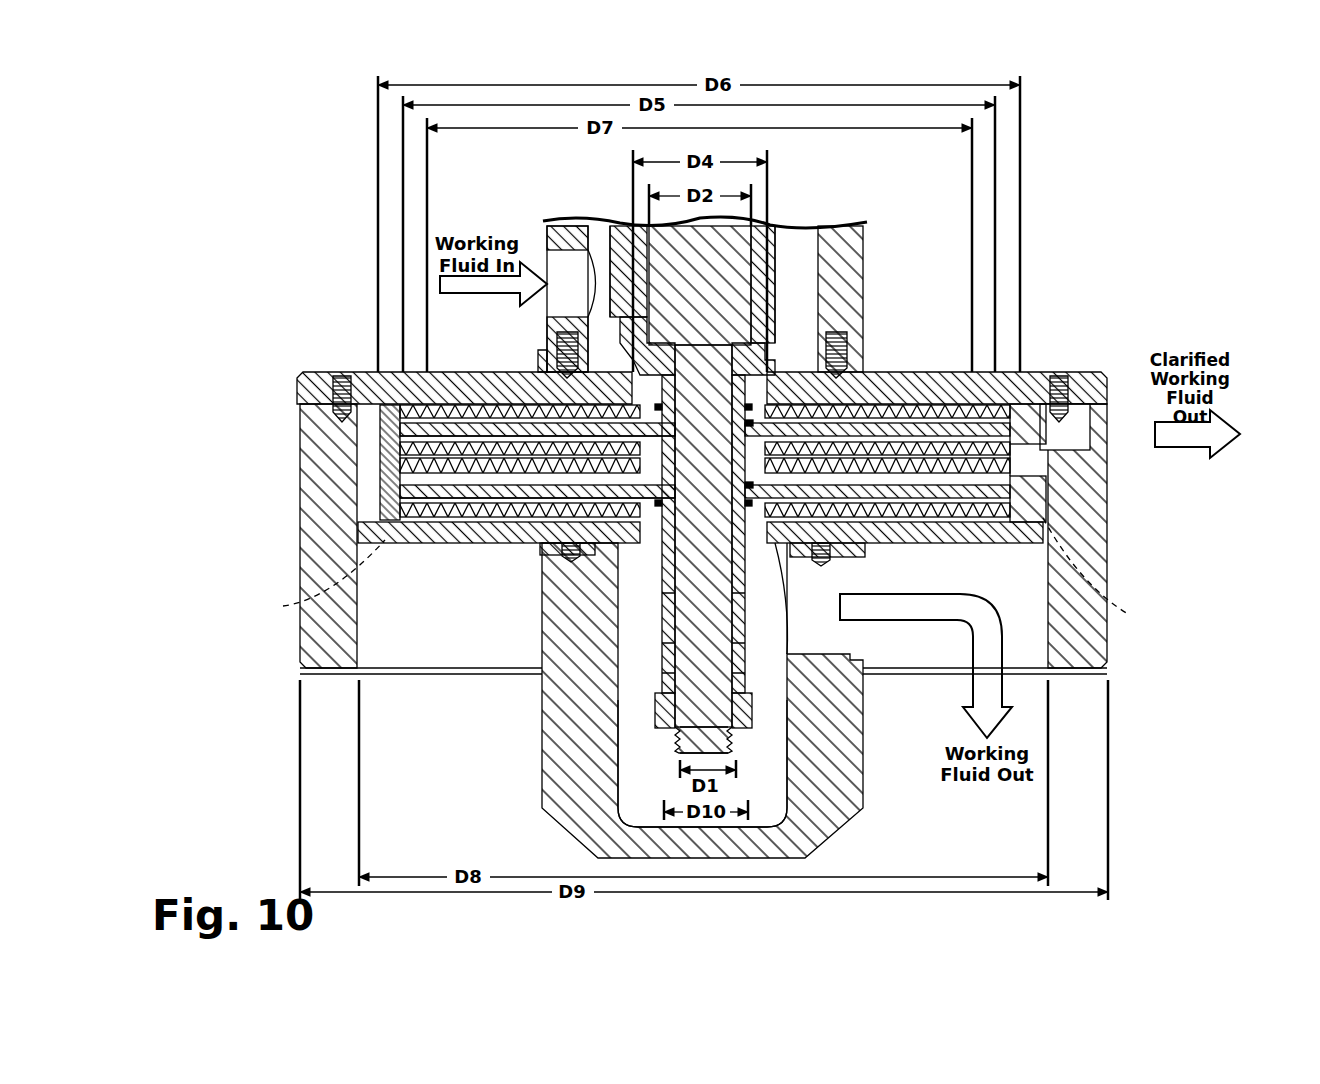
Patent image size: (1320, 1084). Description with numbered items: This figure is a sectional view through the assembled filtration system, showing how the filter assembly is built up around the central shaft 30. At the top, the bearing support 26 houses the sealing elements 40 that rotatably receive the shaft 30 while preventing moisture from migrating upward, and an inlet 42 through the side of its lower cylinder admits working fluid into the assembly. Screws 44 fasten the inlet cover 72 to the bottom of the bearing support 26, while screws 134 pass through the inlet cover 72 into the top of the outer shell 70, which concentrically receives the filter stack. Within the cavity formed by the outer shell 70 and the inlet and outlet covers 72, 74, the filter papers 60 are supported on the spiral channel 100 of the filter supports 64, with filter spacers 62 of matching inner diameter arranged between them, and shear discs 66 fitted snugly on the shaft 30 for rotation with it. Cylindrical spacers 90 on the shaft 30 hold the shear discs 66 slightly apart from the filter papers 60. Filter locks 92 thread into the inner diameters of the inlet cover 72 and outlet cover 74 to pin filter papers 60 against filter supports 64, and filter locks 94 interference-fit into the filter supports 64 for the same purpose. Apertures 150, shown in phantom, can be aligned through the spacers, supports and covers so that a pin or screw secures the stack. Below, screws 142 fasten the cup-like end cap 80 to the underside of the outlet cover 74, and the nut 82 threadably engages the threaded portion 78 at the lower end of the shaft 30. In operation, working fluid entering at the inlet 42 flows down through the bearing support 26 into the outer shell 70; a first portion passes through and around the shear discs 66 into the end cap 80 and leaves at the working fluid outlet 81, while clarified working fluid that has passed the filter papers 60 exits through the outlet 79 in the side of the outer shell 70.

The bearing support 26 is at (862, 284).
The shaft 30 is at (676, 650).
The sealing elements 40 is at (606, 256).
The inlet 42 is at (560, 273).
The screws 44 is at (560, 345).
The filter papers 60 is at (950, 470).
The filter spacers 62 is at (1035, 408).
The filter supports 64 is at (1022, 404).
The shear discs 66 is at (905, 440).
The outer shell 70 is at (1105, 670).
The inlet cover 72 is at (1095, 372).
The outlet cover 74 is at (1090, 630).
The threaded portion 78 is at (735, 745).
The outlet 79 is at (1082, 455).
The end cap 80 is at (850, 816).
The working fluid outlet 81 is at (808, 592).
The nut 82 is at (642, 738).
The spacers 90 is at (750, 500).
The filter locks 92 is at (634, 310).
The filter locks 94 is at (752, 484).
The spiral channel 100 is at (480, 372).
The screws 134 is at (342, 366).
The screws 142 is at (545, 549).
The apertures 150 is at (703, 570).